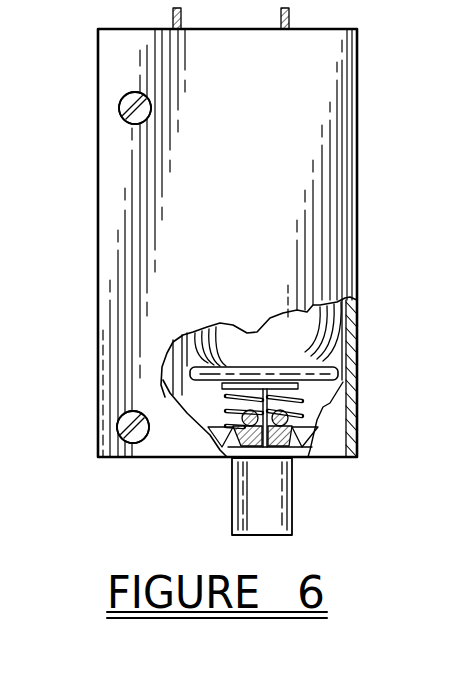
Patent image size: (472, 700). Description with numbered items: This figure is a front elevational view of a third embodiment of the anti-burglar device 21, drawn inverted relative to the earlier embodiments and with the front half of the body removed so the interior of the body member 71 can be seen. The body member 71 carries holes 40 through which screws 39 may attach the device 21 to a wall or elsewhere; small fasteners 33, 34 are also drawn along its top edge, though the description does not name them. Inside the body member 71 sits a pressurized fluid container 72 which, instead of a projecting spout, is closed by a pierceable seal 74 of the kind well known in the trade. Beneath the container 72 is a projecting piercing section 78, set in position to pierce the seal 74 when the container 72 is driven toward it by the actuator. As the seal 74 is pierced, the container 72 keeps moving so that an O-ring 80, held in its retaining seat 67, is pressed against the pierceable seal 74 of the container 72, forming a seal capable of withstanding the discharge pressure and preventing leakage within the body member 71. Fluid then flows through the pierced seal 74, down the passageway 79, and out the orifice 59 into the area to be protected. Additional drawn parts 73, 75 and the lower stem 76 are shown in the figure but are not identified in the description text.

The device 21 is at (359, 90).
The screw 33 is at (290, 14).
The screw 34 is at (172, 14).
The screws 39 is at (126, 107).
The holes 40 is at (122, 100).
The orifice 59 is at (232, 517).
The retaining seat 67 is at (238, 427).
The body member 71 is at (343, 135).
The pressurized fluid container 72 is at (293, 329).
The plate 73 is at (338, 375).
The pierceable seal 74 is at (318, 398).
The block 75 is at (292, 440).
The stem 76 is at (292, 517).
The projecting piercing section 78 is at (251, 408).
The passageway 79 is at (245, 443).
The O-ring 80 is at (290, 418).